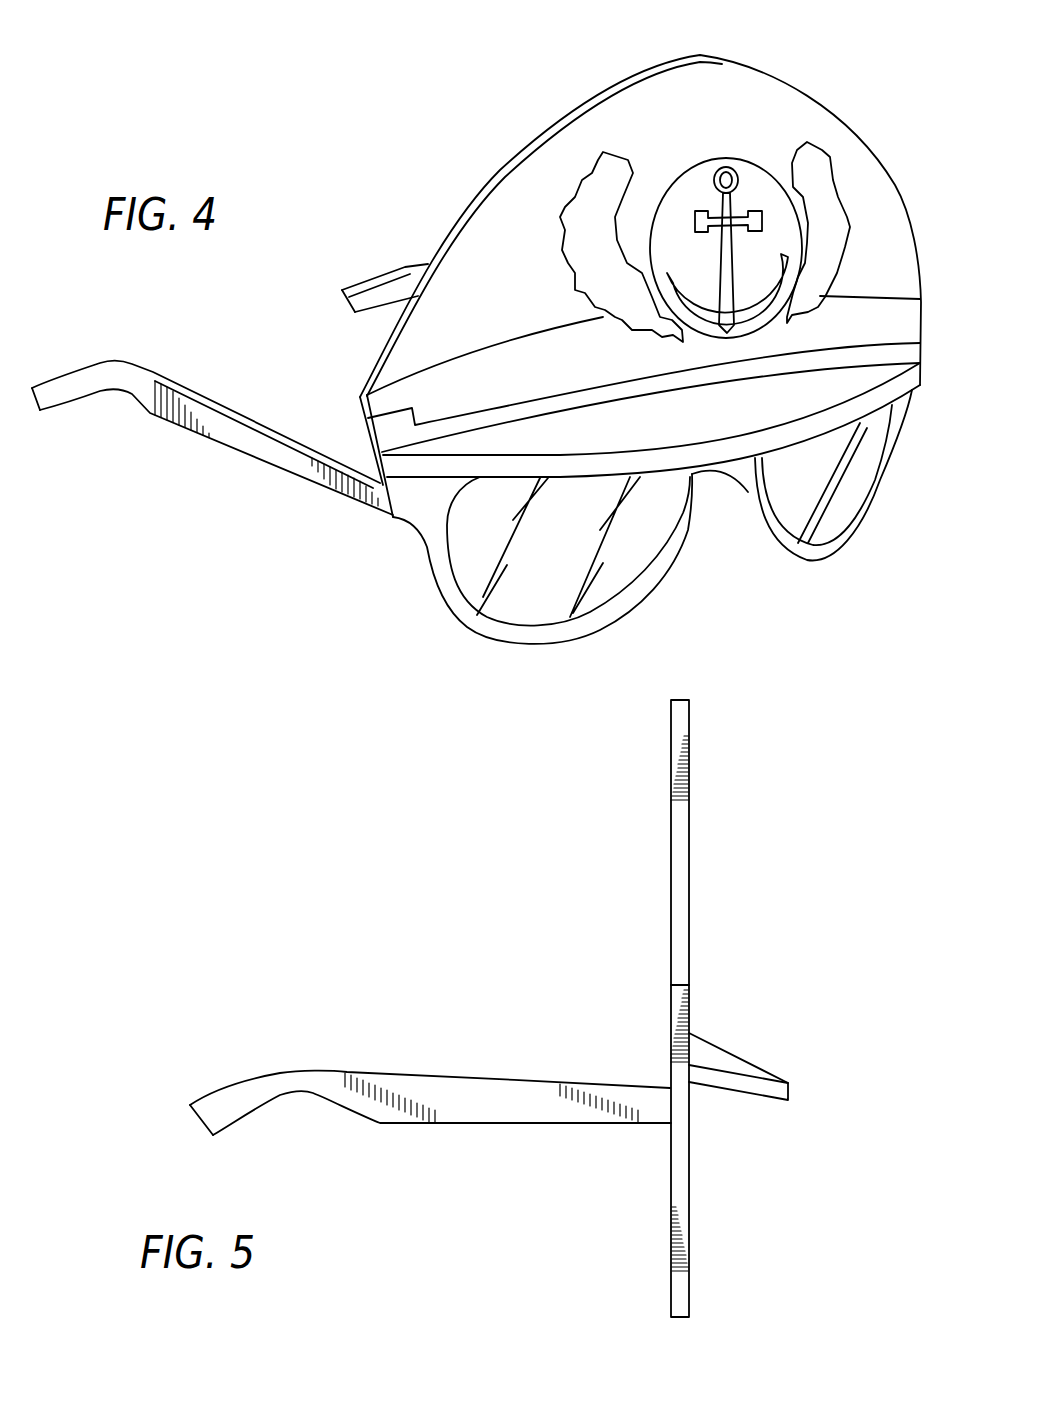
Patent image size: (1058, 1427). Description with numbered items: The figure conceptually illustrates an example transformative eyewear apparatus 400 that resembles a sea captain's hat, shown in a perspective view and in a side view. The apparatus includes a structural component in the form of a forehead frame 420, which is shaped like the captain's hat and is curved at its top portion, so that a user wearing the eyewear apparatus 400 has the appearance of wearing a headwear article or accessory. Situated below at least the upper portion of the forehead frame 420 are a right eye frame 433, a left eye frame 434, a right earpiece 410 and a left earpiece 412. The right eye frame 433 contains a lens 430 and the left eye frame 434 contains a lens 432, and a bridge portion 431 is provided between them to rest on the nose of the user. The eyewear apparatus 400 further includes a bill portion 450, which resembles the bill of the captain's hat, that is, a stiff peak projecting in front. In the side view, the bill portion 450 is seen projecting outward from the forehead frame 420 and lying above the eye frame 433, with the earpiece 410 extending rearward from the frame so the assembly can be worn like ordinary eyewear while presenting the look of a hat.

In FIG. 4, the eyewear apparatus 400 is at (305, 117).
In FIG. 4, the right earpiece 410 is at (148, 398).
In FIG. 5, the right earpiece 410 is at (343, 1085).
In FIG. 4, the left earpiece 412 is at (397, 264).
In FIG. 4, the forehead frame 420 is at (822, 140).
In FIG. 5, the forehead frame 420 is at (689, 853).
In FIG. 4, the lens 430 is at (507, 583).
In FIG. 4, the bridge portion 431 is at (723, 475).
In FIG. 4, the lens 432 is at (827, 518).
In FIG. 4, the right eye frame 433 is at (548, 640).
In FIG. 5, the right eye frame 433 is at (682, 1287).
In FIG. 4, the left eye frame 434 is at (863, 530).
In FIG. 4, the bill portion 450 is at (493, 463).
In FIG. 5, the bill portion 450 is at (732, 1060).